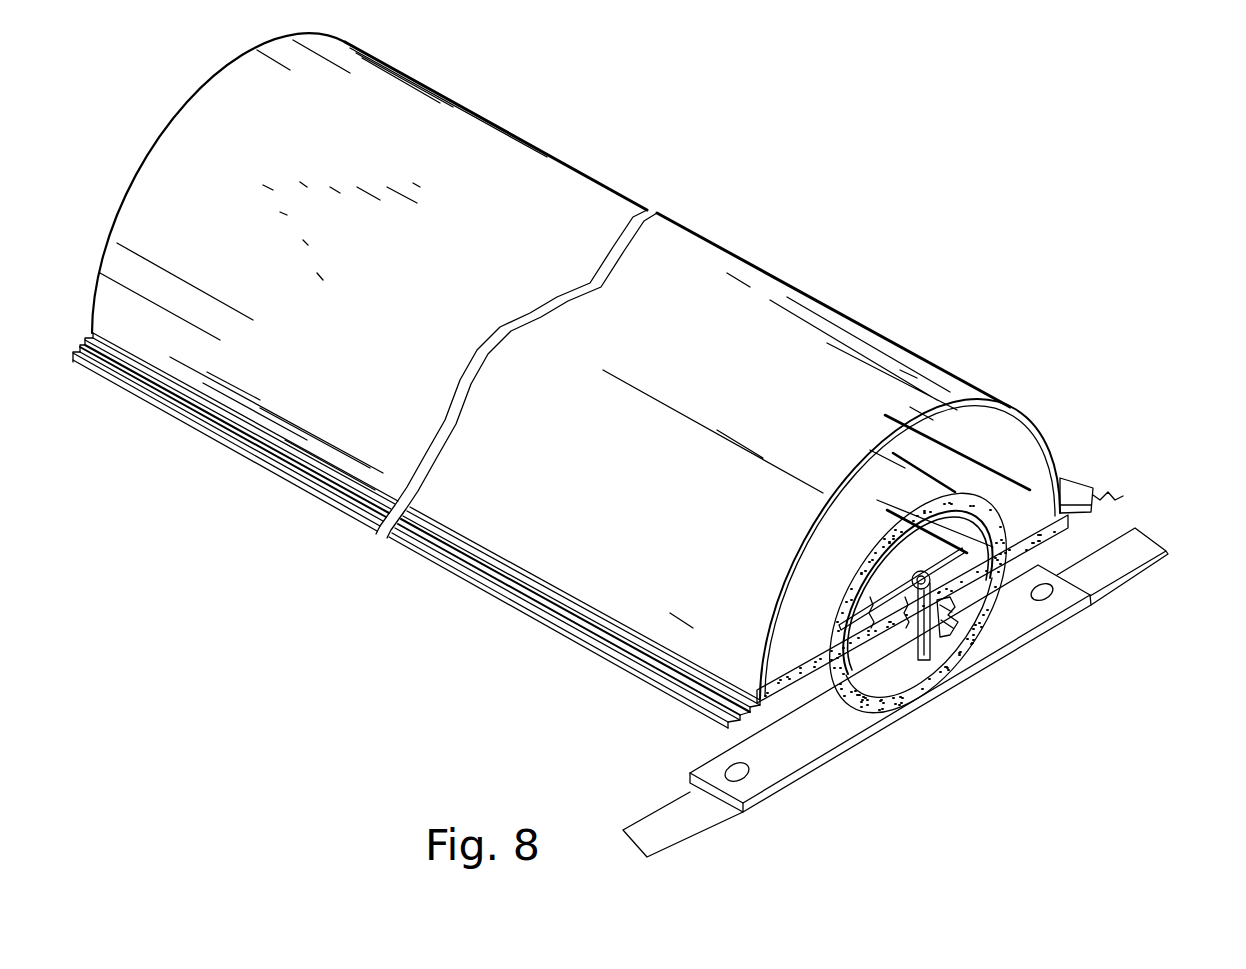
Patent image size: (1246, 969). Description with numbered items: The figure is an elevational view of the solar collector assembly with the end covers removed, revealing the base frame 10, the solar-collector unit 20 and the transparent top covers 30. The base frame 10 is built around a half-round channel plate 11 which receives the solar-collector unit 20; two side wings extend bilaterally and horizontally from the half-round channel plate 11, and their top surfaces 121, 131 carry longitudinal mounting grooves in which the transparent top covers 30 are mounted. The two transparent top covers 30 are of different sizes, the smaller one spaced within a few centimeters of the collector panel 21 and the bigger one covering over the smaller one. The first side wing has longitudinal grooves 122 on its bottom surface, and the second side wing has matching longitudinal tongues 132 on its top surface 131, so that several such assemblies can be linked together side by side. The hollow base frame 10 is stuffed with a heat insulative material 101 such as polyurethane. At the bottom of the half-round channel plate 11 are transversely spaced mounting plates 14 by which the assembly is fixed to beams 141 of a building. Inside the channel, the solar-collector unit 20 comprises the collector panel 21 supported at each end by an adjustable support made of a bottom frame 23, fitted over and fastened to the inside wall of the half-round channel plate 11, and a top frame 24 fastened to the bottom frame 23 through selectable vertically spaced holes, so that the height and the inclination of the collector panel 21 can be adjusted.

The transparent top covers 30 is at (574, 188).
The base frame 10 is at (1032, 492).
The top surface of the first side wing 121 is at (1091, 493).
The longitudinal grooves 122 is at (1093, 493).
The longitudinal tongues 132 is at (617, 643).
The top surface of the second side wing 131 is at (720, 713).
The mounting plates 14 is at (890, 718).
The beams 141 is at (708, 814).
The bottom frame 23 is at (1012, 665).
The half-round channel plate 11 is at (930, 712).
The heat insulative material 101 is at (971, 667).
The collector panel 21 is at (868, 616).
The top frame 24 is at (927, 702).
The solar-collector unit 20 is at (943, 626).